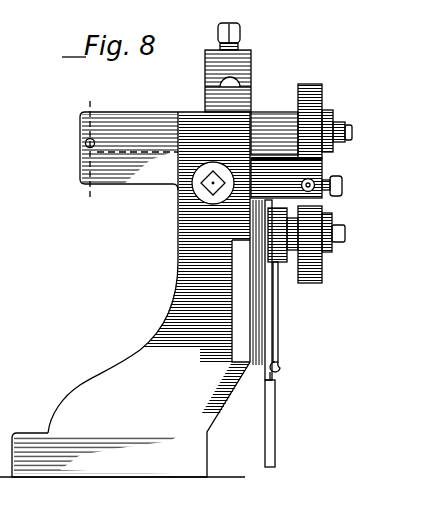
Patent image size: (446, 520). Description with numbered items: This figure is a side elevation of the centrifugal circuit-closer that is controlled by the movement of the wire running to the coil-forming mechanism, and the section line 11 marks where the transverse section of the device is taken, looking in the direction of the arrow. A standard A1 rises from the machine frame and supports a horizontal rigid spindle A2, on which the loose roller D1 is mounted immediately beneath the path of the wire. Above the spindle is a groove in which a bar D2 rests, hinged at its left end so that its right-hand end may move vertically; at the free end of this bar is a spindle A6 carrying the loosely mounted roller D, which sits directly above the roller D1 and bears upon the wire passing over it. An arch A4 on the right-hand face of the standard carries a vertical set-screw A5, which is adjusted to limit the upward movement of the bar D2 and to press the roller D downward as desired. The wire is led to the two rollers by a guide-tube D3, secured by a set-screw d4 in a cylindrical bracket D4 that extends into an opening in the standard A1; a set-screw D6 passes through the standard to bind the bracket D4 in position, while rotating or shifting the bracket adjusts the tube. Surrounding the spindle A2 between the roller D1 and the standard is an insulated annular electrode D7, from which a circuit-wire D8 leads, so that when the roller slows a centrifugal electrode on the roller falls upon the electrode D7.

The section line 11 is at (40, 103).
The standard A1 is at (136, 294).
The horizontal rigid spindle A2 is at (345, 223).
The arch A4 is at (241, 65).
The vertical set-screw A5 is at (240, 33).
The spindle A6 is at (349, 132).
The roller D is at (318, 96).
The loose roller D1 is at (308, 284).
The bar D2 is at (271, 118).
The guide-tube D3 is at (316, 181).
The set-screw d4 is at (342, 190).
The bracket D4 is at (286, 177).
The set-screw D6 is at (203, 184).
The annular electrode D7 is at (283, 264).
The circuit-wire D8 is at (275, 427).